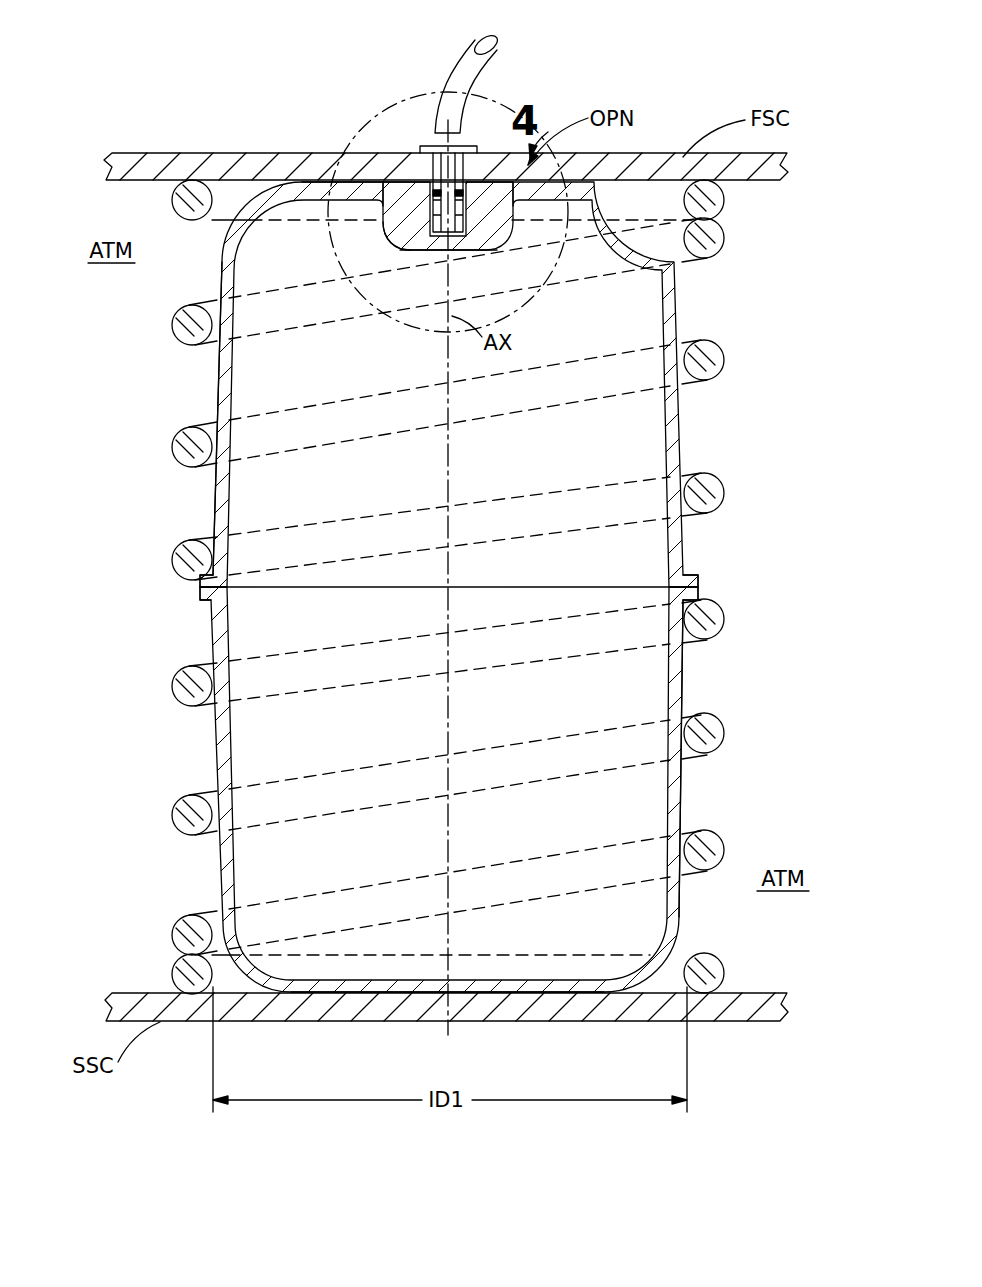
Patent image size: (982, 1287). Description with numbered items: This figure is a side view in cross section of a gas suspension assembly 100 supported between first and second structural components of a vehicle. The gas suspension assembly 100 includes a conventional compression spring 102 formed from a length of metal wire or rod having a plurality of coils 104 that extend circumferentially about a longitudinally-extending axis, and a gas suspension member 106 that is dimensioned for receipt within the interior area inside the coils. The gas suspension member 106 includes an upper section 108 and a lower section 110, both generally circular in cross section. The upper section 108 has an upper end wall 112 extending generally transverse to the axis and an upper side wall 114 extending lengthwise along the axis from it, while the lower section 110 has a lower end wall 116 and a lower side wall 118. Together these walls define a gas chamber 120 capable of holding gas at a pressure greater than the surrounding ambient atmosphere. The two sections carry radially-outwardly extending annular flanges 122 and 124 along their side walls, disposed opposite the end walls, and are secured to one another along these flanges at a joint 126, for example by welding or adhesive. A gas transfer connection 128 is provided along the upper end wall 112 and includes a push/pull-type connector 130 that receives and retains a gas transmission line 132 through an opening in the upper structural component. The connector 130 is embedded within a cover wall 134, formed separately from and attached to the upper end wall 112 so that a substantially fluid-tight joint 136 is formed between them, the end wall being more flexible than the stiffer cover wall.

The gas suspension assembly 100 is at (762, 300).
The compression spring 102 is at (183, 425).
The coils 104 is at (181, 553).
The gas suspension member 106 is at (718, 420).
The upper section 108 is at (686, 447).
The lower section 110 is at (689, 783).
The upper end wall 112 is at (347, 180).
The upper side wall 114 is at (221, 517).
The lower end wall 116 is at (400, 985).
The lower side wall 118 is at (690, 678).
The gas chamber 120 is at (630, 330).
The annular flange 122 is at (700, 584).
The annular flange 124 is at (204, 597).
The joint 126 is at (360, 592).
The gas transfer connection 128 is at (384, 155).
The push/pull-type connector 130 is at (430, 152).
The gas transmission line 132 is at (468, 62).
The cover wall 134 is at (398, 258).
The fluid-tight joint 136 is at (386, 256).